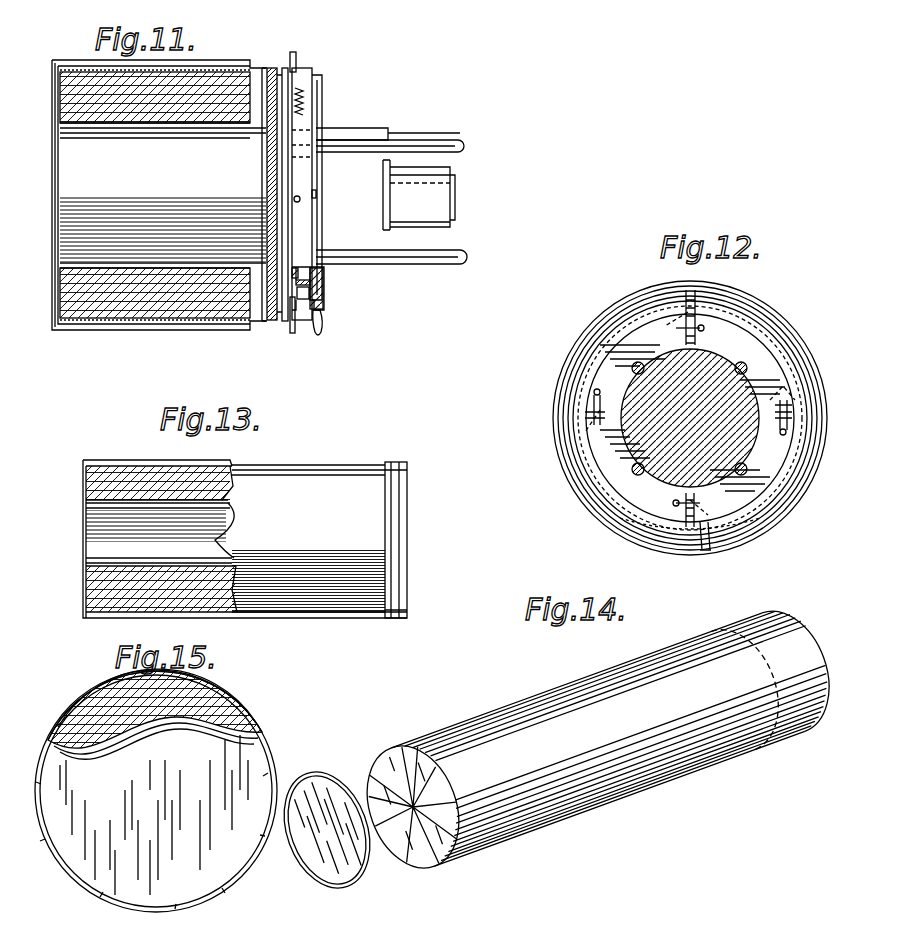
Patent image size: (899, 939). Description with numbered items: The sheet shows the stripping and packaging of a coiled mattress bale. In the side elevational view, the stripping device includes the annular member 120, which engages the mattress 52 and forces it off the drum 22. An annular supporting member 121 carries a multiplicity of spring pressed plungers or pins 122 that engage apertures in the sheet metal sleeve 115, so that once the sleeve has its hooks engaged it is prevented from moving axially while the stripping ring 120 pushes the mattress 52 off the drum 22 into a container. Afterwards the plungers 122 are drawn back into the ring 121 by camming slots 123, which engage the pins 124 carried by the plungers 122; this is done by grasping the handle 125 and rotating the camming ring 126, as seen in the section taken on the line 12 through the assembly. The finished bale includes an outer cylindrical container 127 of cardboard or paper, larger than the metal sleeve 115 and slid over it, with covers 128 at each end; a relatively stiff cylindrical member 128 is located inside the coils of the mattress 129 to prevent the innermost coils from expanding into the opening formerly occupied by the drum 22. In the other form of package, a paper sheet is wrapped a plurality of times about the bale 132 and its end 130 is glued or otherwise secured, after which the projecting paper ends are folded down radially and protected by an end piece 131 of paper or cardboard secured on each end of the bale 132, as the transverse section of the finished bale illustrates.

In FIG. 11, the section line 12 is at (345, 40).
In FIG. 11, the drum 22 is at (254, 140).
In FIG. 11, the mattress 52 is at (222, 82).
In FIG. 11, the sheet metal sleeve 115 is at (271, 102).
In FIG. 11, the annular member 120 is at (312, 102).
In FIG. 11, the annular supporting member 121 is at (306, 142).
In FIG. 11, the spring pressed plungers or pins 122 is at (302, 64).
In FIG. 11, the camming slots 123 is at (324, 278).
In FIG. 12, the camming slots 123 is at (700, 322).
In FIG. 11, the pins 124 is at (323, 301).
In FIG. 12, the pins 124 is at (690, 298).
In FIG. 11, the handle 125 is at (313, 334).
In FIG. 12, the handle 125 is at (705, 548).
In FIG. 12, the camming ring 126 is at (762, 535).
In FIG. 13, the outer cylindrical container 127 is at (296, 472).
In FIG. 13, the cover / inner cylindrical member 128 is at (128, 490).
In FIG. 15, the cover / inner cylindrical member 128 is at (145, 738).
In FIG. 13, the mattress 129 is at (146, 462).
In FIG. 15, the mattress 129 is at (88, 706).
In FIG. 15, the end of paper sheet 130 is at (212, 688).
In FIG. 15, the end piece 131 is at (207, 876).
In FIG. 14, the bale 132 is at (475, 713).